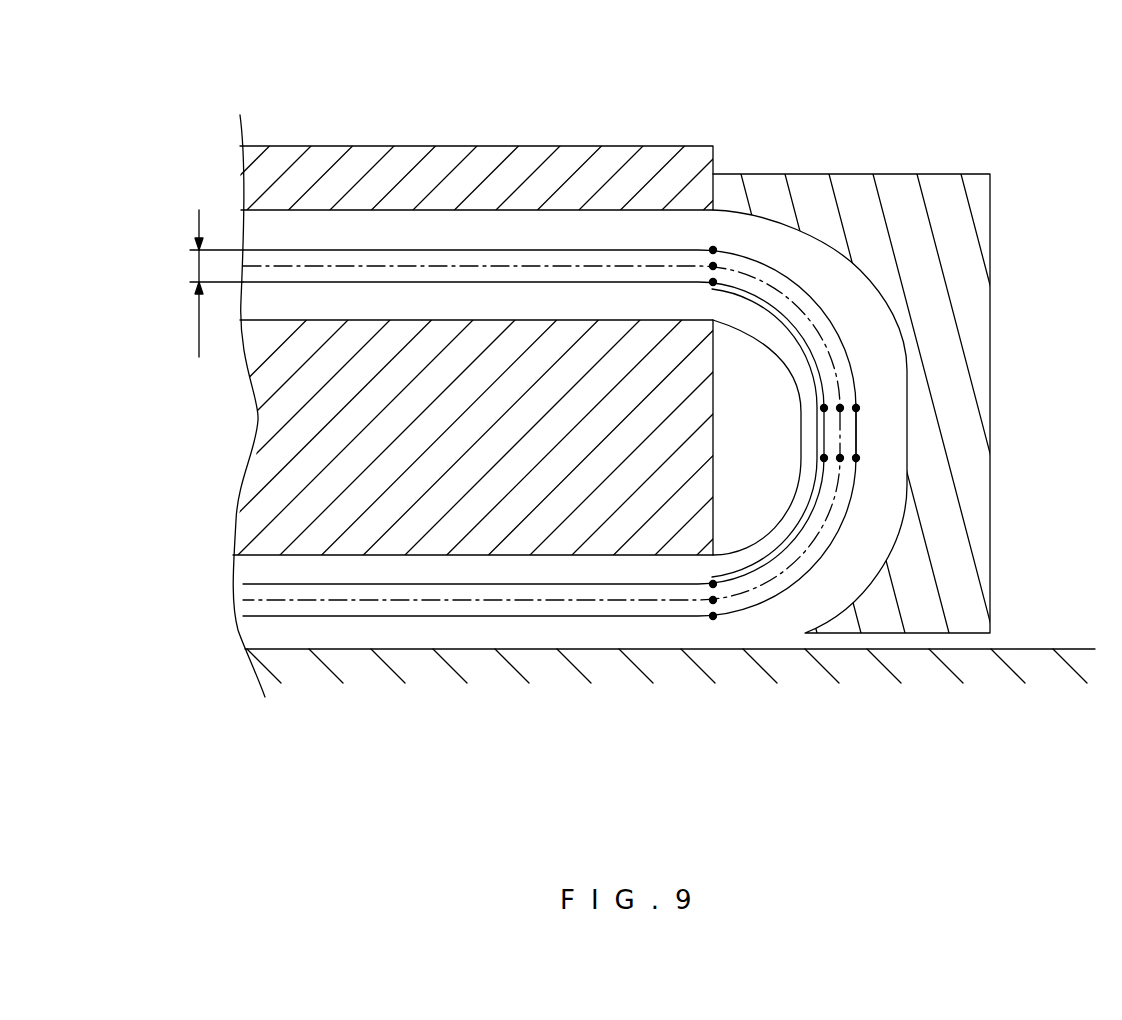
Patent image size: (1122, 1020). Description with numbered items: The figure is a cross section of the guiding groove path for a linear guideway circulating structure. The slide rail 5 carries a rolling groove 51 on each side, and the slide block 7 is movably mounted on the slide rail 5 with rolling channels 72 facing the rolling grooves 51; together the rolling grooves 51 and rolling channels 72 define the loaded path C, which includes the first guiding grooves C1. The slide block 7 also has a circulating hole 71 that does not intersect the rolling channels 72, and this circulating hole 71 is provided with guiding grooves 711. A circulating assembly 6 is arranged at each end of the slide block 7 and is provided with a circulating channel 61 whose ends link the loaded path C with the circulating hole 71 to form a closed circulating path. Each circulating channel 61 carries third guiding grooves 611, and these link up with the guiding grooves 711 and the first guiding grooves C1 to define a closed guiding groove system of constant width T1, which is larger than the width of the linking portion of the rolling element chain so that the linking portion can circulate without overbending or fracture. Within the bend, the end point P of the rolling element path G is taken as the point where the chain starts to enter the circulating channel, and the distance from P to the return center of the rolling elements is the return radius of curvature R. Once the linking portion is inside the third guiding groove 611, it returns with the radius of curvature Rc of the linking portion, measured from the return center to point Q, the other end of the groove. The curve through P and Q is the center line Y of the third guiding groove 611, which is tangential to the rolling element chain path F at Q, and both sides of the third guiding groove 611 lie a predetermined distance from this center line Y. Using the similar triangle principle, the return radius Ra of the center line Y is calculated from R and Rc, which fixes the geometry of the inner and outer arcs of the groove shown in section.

The slide block 7 is at (437, 162).
The circulating hole 71 is at (268, 236).
The guiding grooves 711 is at (515, 250).
The rolling channels 72 is at (255, 548).
The circulating assembly 6 is at (975, 197).
The circulating channel 61 is at (885, 487).
The third guiding grooves 611 is at (877, 371).
The slide rail 5 is at (598, 655).
The rolling groove 51 is at (483, 652).
The loaded path C is at (268, 629).
The first guiding grooves C1 is at (333, 620).
The rolling element path G is at (345, 266).
The width of the guiding groove system T1 is at (205, 283).
The end point P is at (713, 266).
The point P' P′ is at (713, 282).
The point Q is at (852, 405).
The return radius of curvature of the rolling elements R is at (753, 262).
The return radius of curvature of the linking portion Rc is at (770, 290).
The return radius of the center line Ra is at (793, 288).
The center line of the third guiding groove Y is at (739, 326).
The rolling element chain path F is at (772, 315).